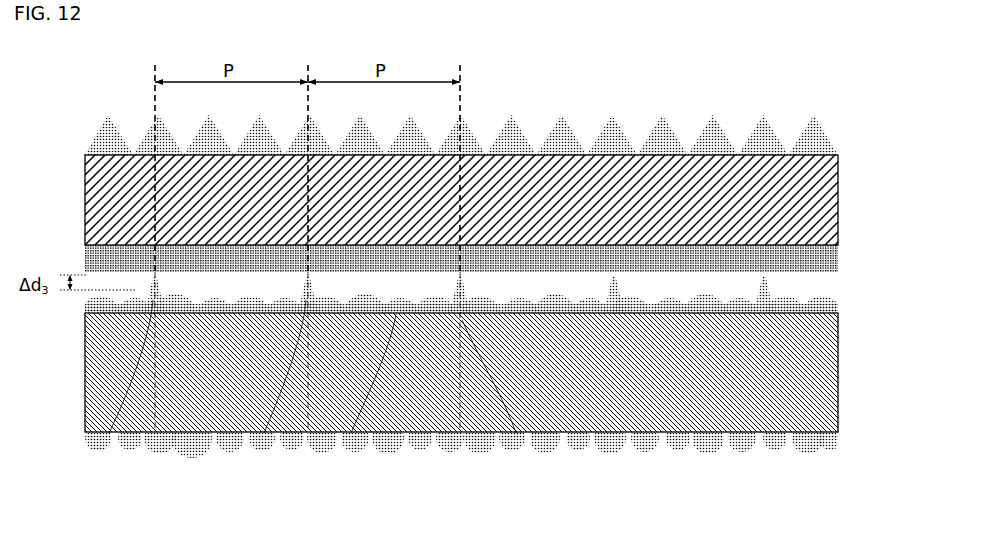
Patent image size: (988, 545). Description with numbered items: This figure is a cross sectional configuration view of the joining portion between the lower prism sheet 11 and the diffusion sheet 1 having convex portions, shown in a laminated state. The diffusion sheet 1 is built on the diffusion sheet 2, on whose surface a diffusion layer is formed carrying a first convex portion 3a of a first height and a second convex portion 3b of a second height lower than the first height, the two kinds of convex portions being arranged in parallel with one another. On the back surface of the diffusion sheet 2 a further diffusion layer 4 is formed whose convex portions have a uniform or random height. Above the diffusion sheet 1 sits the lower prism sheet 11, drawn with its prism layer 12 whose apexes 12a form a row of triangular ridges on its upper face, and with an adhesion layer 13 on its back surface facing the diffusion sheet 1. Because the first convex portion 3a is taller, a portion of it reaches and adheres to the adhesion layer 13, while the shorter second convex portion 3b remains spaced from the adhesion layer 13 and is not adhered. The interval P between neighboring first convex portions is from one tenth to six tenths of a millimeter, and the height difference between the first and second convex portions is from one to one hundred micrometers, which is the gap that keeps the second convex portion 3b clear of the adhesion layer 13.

The diffusion sheet having convex portions 1 is at (890, 255).
The diffusion sheet 2 is at (848, 317).
The first convex portion 3a is at (107, 450).
The second convex portion 3b is at (350, 436).
The diffusion layer 4 is at (809, 453).
The lower prism sheet 11 is at (845, 157).
The prism portion 12 is at (845, 115).
The prism apex 12a is at (772, 127).
The adhesion layer 13 is at (86, 254).